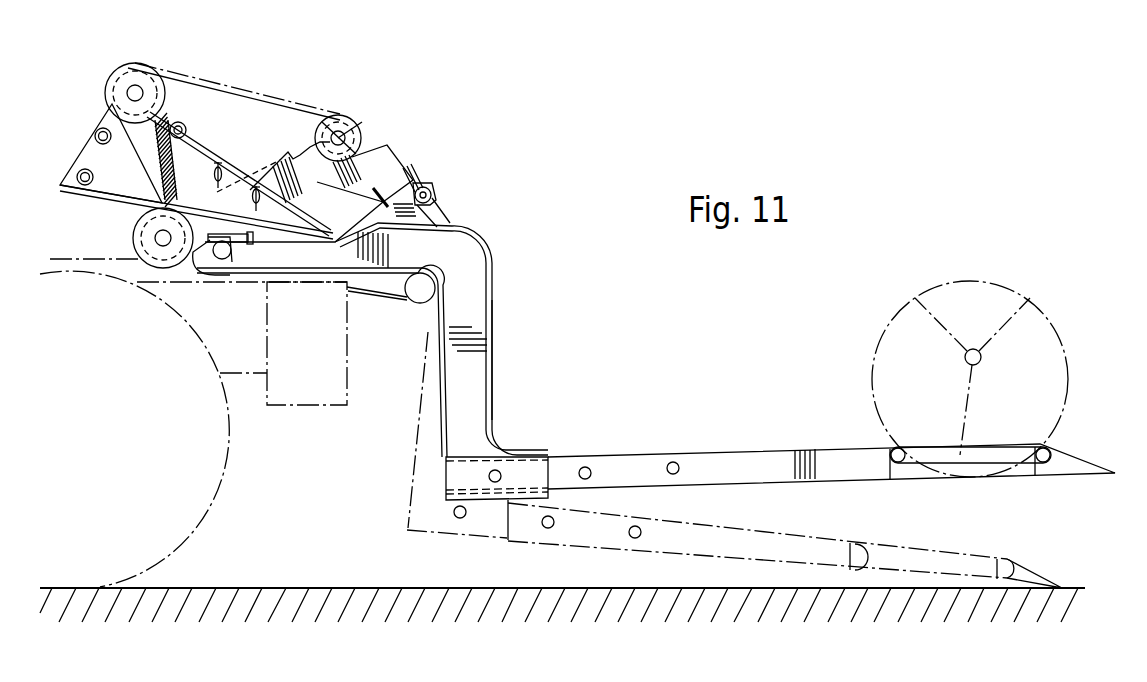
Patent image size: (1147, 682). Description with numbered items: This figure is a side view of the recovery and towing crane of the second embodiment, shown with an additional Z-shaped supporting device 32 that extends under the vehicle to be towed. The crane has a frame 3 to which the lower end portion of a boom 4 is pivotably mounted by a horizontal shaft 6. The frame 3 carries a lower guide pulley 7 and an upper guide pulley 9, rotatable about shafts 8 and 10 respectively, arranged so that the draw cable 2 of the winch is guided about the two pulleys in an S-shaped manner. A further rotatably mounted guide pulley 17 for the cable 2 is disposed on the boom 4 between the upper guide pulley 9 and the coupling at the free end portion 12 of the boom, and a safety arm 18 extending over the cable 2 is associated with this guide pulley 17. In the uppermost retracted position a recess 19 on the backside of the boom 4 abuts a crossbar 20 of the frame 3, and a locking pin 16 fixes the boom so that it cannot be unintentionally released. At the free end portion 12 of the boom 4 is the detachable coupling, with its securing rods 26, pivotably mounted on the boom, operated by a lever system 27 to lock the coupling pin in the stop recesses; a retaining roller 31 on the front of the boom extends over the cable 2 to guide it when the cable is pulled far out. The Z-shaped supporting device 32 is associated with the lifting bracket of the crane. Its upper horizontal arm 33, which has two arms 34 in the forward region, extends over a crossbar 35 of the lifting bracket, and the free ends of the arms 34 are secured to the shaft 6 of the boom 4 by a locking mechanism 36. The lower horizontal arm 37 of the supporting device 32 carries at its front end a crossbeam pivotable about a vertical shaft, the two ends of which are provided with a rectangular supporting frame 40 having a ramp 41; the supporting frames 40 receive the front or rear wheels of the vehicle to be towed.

The draw cable 2 is at (276, 97).
The frame 3 is at (92, 147).
The boom 4 is at (326, 186).
The shaft 6 is at (222, 259).
The lower guide pulley 7 is at (136, 235).
The shaft 8 is at (160, 246).
The upper guide pulley 9 is at (120, 77).
The shaft 10 is at (128, 92).
The free end portion 12 is at (393, 168).
The pin 16 is at (212, 170).
The guide pulley 17 is at (348, 117).
The safety arm 18 is at (352, 131).
The recess 19 is at (289, 153).
The crossbar 20 is at (187, 130).
The securing rods 26 is at (408, 220).
The lever system 27 is at (414, 180).
The retaining roller 31 is at (432, 192).
The Z-shaped supporting device 32 is at (572, 380).
The upper horizontal arm 33 is at (300, 264).
The arms 34 is at (477, 393).
The crossbar 35 is at (418, 296).
The locking mechanism 36 is at (243, 244).
The lower horizontal arm 37 is at (660, 452).
The supporting frame 40 is at (930, 480).
The ramp 41 is at (1068, 456).